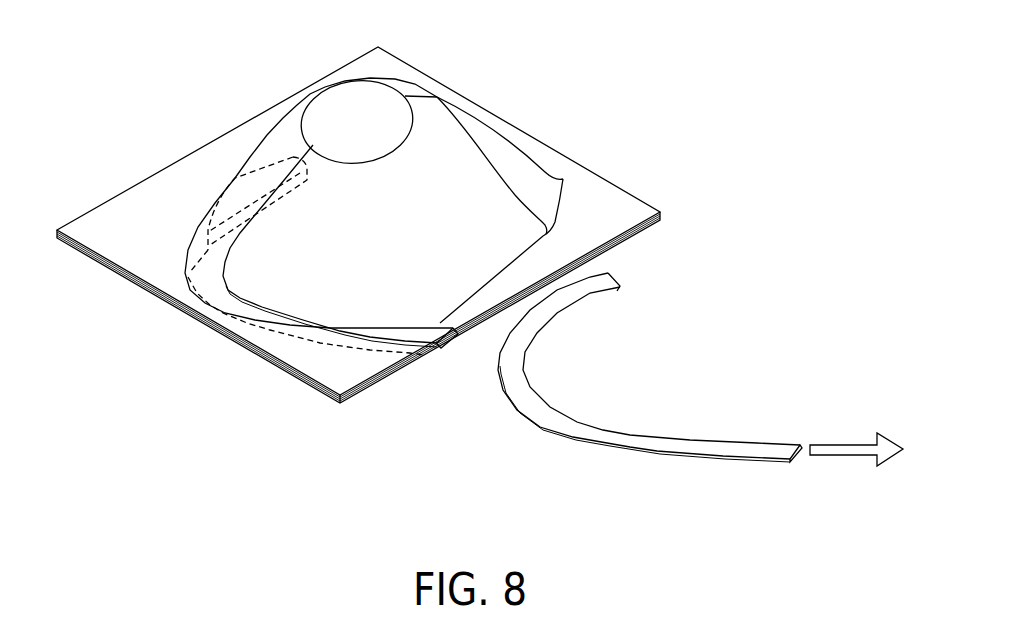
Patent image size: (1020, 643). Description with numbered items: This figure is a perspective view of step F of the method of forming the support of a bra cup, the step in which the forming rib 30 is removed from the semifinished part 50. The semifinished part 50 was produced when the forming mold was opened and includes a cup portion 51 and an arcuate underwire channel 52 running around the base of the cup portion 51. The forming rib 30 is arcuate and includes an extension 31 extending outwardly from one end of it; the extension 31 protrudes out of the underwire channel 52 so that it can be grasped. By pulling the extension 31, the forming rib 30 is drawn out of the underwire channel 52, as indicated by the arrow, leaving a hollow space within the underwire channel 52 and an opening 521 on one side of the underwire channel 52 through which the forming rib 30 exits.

The forming rib 30 is at (607, 440).
The extension 31 is at (780, 460).
The semifinished part 50 is at (520, 130).
The cup portion 51 is at (288, 143).
The underwire channel 52 is at (233, 300).
The opening 521 is at (442, 347).